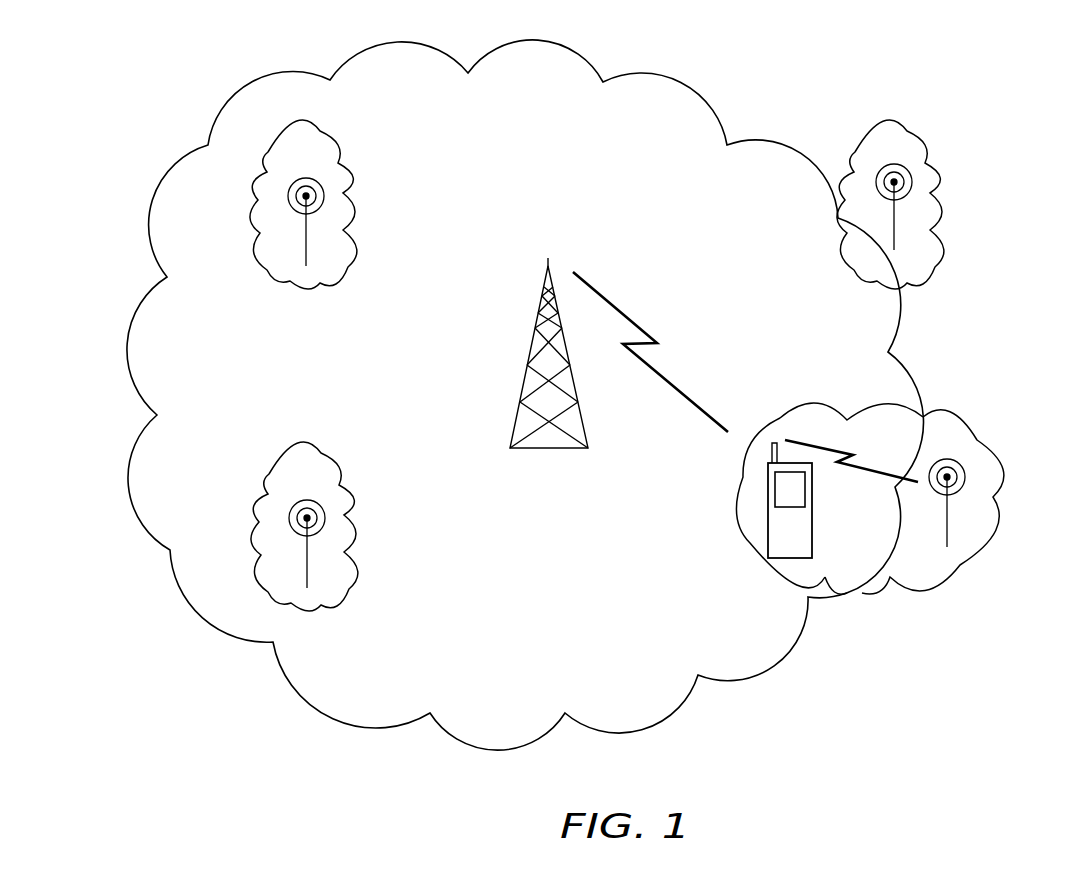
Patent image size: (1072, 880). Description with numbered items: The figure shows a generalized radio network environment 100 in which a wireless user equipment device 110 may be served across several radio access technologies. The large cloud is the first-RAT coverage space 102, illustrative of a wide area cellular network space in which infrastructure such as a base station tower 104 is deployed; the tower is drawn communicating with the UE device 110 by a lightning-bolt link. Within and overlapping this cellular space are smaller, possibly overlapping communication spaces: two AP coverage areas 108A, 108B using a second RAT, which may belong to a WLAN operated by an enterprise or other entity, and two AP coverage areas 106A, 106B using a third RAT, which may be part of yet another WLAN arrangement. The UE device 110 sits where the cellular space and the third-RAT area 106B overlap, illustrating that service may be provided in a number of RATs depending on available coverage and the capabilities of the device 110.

The radio network environment 100 is at (979, 97).
The RAT-1 coverage space 102 is at (538, 681).
The base station tower 104 is at (563, 483).
The AP coverage area 106A is at (413, 552).
The AP coverage area 106B is at (1061, 519).
The AP coverage area 108A is at (1001, 230).
The AP coverage area 108B is at (413, 230).
The user equipment device 110 is at (812, 536).